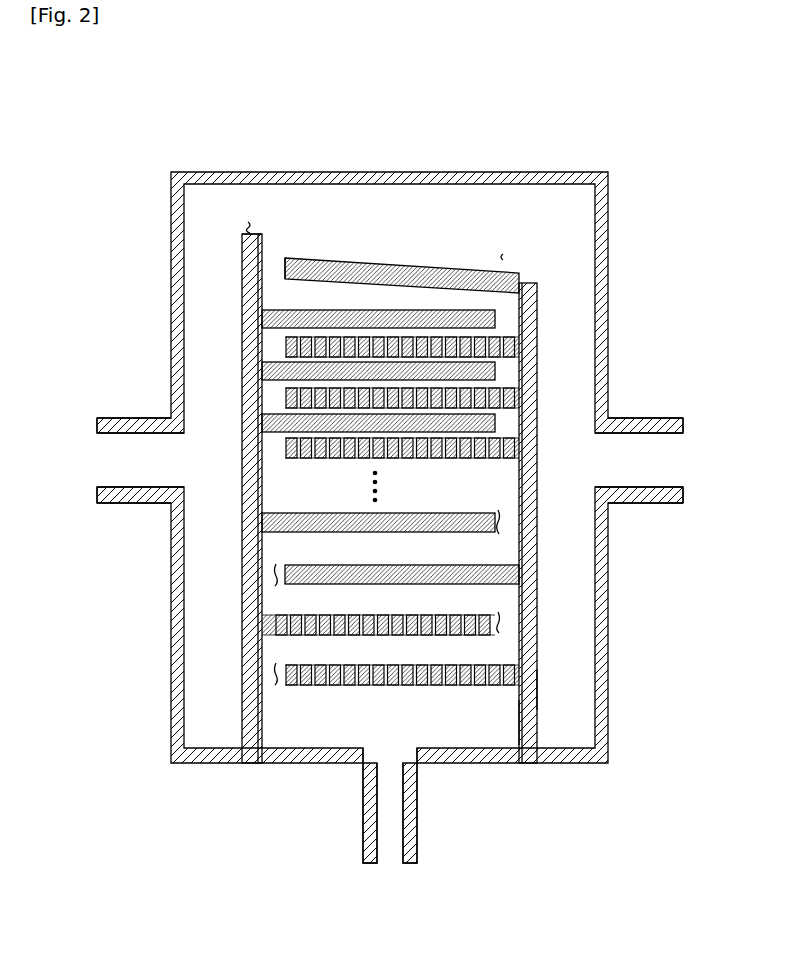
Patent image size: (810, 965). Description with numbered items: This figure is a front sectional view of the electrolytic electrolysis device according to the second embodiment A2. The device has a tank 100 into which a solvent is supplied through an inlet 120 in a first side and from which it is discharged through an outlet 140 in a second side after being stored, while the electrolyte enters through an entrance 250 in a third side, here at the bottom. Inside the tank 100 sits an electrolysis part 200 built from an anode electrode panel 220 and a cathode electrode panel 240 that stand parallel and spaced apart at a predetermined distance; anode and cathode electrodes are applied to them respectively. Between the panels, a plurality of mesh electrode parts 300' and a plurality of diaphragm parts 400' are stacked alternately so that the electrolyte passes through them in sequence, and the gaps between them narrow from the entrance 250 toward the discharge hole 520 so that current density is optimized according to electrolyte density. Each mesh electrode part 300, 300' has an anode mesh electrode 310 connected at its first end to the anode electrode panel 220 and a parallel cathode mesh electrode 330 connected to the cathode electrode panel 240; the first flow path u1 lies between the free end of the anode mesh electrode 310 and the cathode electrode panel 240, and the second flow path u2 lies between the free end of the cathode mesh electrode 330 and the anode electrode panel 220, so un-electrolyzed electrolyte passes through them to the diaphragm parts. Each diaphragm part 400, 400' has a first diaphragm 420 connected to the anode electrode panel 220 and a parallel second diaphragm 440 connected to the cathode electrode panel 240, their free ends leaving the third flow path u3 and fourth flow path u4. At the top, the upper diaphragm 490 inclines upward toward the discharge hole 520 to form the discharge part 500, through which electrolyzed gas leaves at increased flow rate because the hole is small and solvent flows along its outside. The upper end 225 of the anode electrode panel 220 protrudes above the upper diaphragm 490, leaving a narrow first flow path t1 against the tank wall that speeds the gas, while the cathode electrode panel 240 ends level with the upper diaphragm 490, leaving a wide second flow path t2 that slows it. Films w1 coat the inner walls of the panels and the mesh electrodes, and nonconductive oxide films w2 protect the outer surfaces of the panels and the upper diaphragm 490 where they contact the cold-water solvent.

The tank 100 is at (618, 213).
The inlet 120 is at (133, 418).
The outlet 140 is at (673, 418).
The electrolysis part 200 is at (587, 539).
The anode electrode panel 220 is at (243, 745).
The upper end of the anode electrode panel 225 is at (242, 238).
The cathode electrode panel 240 is at (537, 722).
The entrance 250 is at (417, 840).
The mesh electrode part 300 is at (390, 776).
The anode mesh electrode 310 is at (350, 636).
The cathode mesh electrode 330 is at (345, 903).
The mesh electrode part 300' is at (473, 397).
The diaphragm part 400 is at (274, 548).
The first diaphragm 420 is at (290, 520).
The second diaphragm 440 is at (318, 572).
The diaphragm part 400' is at (464, 351).
The upper diaphragm 490 is at (400, 272).
The discharge part 500 is at (264, 210).
The discharge hole 520 is at (278, 267).
The second embodiment A2 is at (570, 125).
The first flow path t1 is at (248, 224).
The second flow path t2 is at (503, 256).
The first flow path u1 is at (500, 618).
The second flow path u2 is at (275, 686).
The third flow path u3 is at (500, 514).
The fourth flow path u4 is at (277, 577).
The film w1 is at (518, 722).
The nonconductive oxide film w2 is at (538, 688).